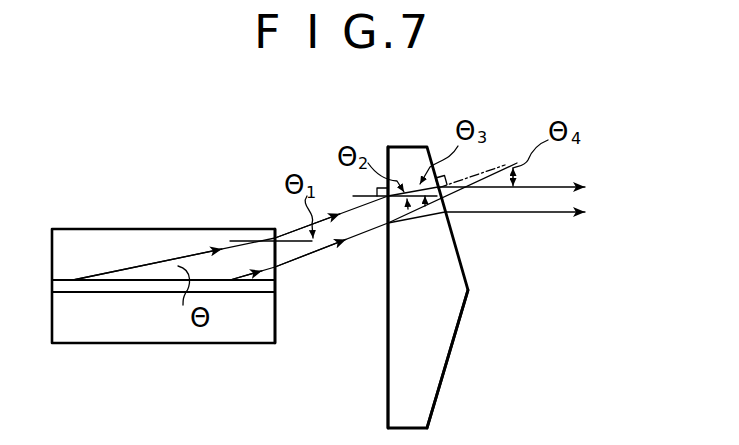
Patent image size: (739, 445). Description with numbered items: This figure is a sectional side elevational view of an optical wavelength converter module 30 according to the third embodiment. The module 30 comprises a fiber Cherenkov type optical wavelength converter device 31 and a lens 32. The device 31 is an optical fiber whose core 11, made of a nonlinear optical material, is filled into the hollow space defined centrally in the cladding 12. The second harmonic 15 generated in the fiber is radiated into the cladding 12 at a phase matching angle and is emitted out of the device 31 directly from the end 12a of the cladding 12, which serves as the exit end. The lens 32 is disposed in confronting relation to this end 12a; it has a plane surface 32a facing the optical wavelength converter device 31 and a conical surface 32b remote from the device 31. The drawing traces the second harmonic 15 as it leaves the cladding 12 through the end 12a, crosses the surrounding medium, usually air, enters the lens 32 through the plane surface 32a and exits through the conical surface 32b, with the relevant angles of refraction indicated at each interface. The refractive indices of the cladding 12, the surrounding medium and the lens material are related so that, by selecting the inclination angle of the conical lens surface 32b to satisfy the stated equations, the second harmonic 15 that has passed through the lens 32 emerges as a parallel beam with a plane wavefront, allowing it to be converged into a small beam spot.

The core 11 is at (99, 287).
The cladding 12 is at (100, 248).
The end of the cladding 12a is at (275, 320).
The second harmonic 15 is at (305, 256).
The optical wavelength converter module 30 is at (307, 137).
The optical wavelength converter device 31 is at (177, 206).
The lens 32 is at (481, 272).
The plane surface 32a is at (387, 392).
The conical surface 32b is at (437, 402).